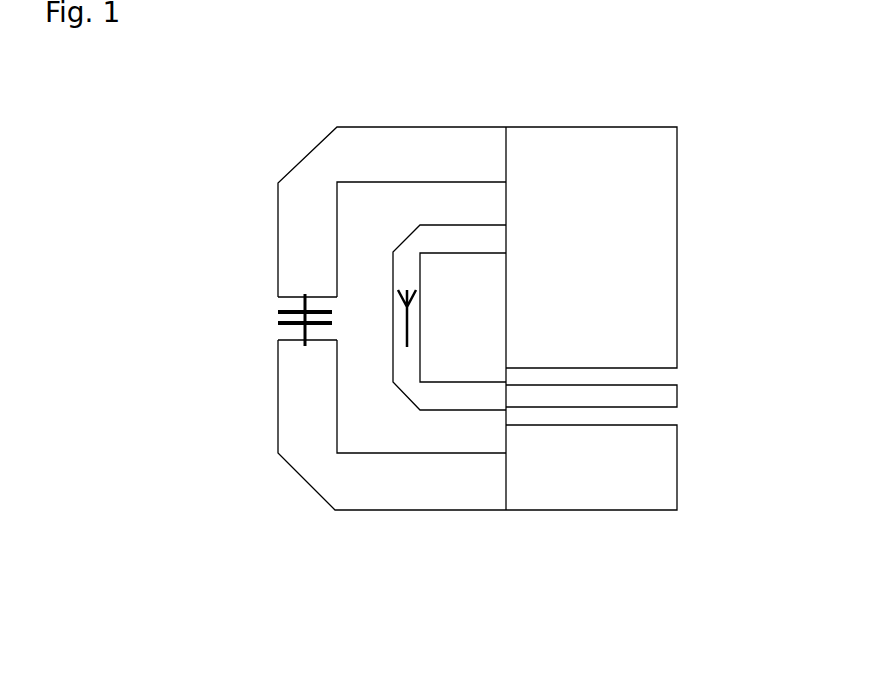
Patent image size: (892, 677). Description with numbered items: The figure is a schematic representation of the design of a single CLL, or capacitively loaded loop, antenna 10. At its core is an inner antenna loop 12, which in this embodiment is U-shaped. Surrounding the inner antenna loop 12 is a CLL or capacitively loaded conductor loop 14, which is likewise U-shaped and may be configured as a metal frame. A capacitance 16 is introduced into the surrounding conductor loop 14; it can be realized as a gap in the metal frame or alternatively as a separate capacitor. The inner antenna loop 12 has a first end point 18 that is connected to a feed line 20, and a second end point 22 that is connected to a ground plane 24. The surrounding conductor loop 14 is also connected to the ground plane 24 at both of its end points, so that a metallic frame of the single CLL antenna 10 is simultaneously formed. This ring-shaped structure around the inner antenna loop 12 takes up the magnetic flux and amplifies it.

The single CLL antenna 10 is at (703, 97).
The inner antenna loop 12 is at (437, 237).
The capacitively loaded conductor loop 14 is at (283, 413).
The capacitance 16 is at (279, 318).
The first end point 18 is at (500, 405).
The feed line 20 is at (652, 395).
The second end point 22 is at (502, 240).
The ground plane 24 is at (637, 275).